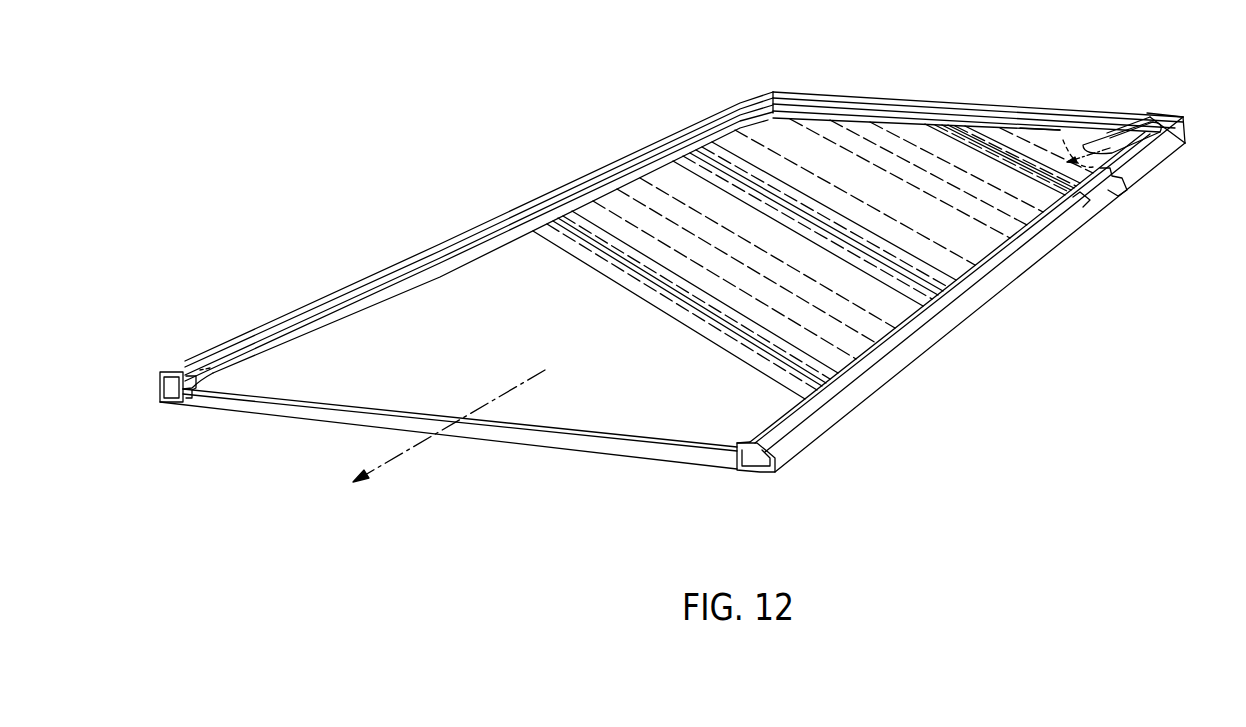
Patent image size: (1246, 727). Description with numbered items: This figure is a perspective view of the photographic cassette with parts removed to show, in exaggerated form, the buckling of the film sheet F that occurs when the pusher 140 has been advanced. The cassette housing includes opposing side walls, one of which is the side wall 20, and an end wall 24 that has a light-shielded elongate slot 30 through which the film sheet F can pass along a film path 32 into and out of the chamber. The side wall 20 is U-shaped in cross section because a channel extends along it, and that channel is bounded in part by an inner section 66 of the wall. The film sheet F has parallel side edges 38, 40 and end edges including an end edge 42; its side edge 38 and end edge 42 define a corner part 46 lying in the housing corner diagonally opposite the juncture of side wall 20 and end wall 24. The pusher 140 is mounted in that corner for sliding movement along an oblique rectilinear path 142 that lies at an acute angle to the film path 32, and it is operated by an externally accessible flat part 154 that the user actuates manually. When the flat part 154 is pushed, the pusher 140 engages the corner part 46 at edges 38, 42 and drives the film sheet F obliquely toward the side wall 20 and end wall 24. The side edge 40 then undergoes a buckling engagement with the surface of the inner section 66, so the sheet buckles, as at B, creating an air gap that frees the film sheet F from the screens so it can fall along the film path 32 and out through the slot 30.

The side wall 20 is at (357, 278).
The end wall 24 is at (297, 420).
The slot 30 is at (187, 400).
The film path 32 is at (393, 460).
The side edge 38 is at (1093, 197).
The side edge 40 is at (476, 256).
The end edge 42 is at (1020, 128).
The corner part 46 is at (1073, 140).
The inner section 66 is at (287, 343).
The pusher 140 is at (1152, 117).
The oblique rectilinear path 142 is at (1107, 143).
The flat part 154 is at (1123, 133).
The buckling B is at (937, 123).
The film sheet F is at (491, 339).